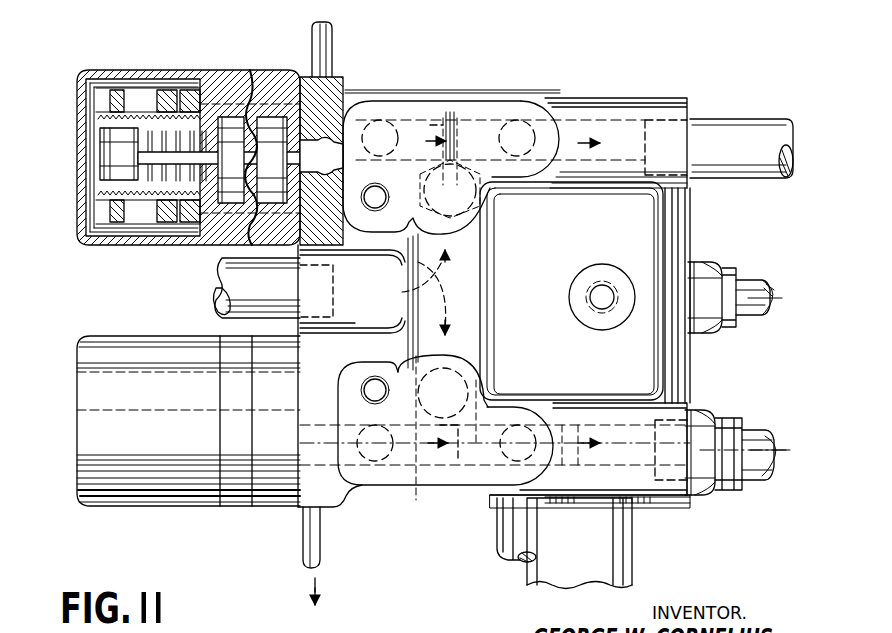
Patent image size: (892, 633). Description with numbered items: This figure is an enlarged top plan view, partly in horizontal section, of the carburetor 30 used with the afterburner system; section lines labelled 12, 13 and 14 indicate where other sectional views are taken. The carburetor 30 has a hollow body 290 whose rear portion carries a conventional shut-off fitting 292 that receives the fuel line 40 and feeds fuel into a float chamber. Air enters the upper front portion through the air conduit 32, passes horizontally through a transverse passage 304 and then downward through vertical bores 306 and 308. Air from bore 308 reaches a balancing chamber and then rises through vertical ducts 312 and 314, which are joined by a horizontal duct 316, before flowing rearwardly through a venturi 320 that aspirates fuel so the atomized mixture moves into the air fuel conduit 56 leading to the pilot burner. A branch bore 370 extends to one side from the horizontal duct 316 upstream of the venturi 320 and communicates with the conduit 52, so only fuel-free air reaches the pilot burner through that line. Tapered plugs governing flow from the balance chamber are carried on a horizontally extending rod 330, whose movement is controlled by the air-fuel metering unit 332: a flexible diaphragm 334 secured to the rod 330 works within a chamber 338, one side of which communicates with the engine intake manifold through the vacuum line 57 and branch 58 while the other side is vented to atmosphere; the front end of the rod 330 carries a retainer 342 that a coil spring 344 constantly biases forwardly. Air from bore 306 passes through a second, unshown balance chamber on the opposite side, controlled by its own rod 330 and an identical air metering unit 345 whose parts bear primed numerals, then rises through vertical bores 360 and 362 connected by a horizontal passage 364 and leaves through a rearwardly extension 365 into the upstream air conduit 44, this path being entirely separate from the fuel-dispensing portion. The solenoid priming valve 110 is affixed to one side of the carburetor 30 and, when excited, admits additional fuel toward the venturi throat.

The carburetor 30 is at (527, 92).
The air conduit 32 is at (246, 290).
The fuel line 40 is at (748, 285).
The upstream air conduit 44 is at (720, 140).
The conduit 52 is at (505, 552).
The air fuel conduit 56 is at (772, 480).
The vacuum line 57 is at (302, 556).
The branch 58 is at (324, 46).
The priming valve 110 is at (579, 543).
The hollow body 290 is at (662, 232).
The shut-off fitting 292 is at (702, 262).
The transverse passage 304 is at (492, 262).
The vertical bore 306 is at (494, 206).
The vertical bore 308 is at (474, 382).
The vertical duct 312 is at (375, 462).
The vertical duct 314 is at (505, 462).
The horizontal duct 316 is at (445, 462).
The venturi 320 is at (652, 498).
The rod 330 is at (334, 160).
The air-fuel metering unit 332 is at (78, 340).
The flexible diaphragm 334 is at (278, 117).
The chamber 338 is at (240, 117).
The retainer 342 is at (104, 150).
The coil spring 344 is at (168, 198).
The air metering unit 345 is at (86, 247).
The vertical bore 360 is at (388, 120).
The vertical bore 362 is at (565, 116).
The horizontal passage 364 is at (452, 118).
The rearwardly extension 365 is at (618, 128).
The branch bore 370 is at (502, 512).
The section line 12 is at (212, 282).
The section line 13 is at (27, 410).
The section line 14 is at (586, 400).